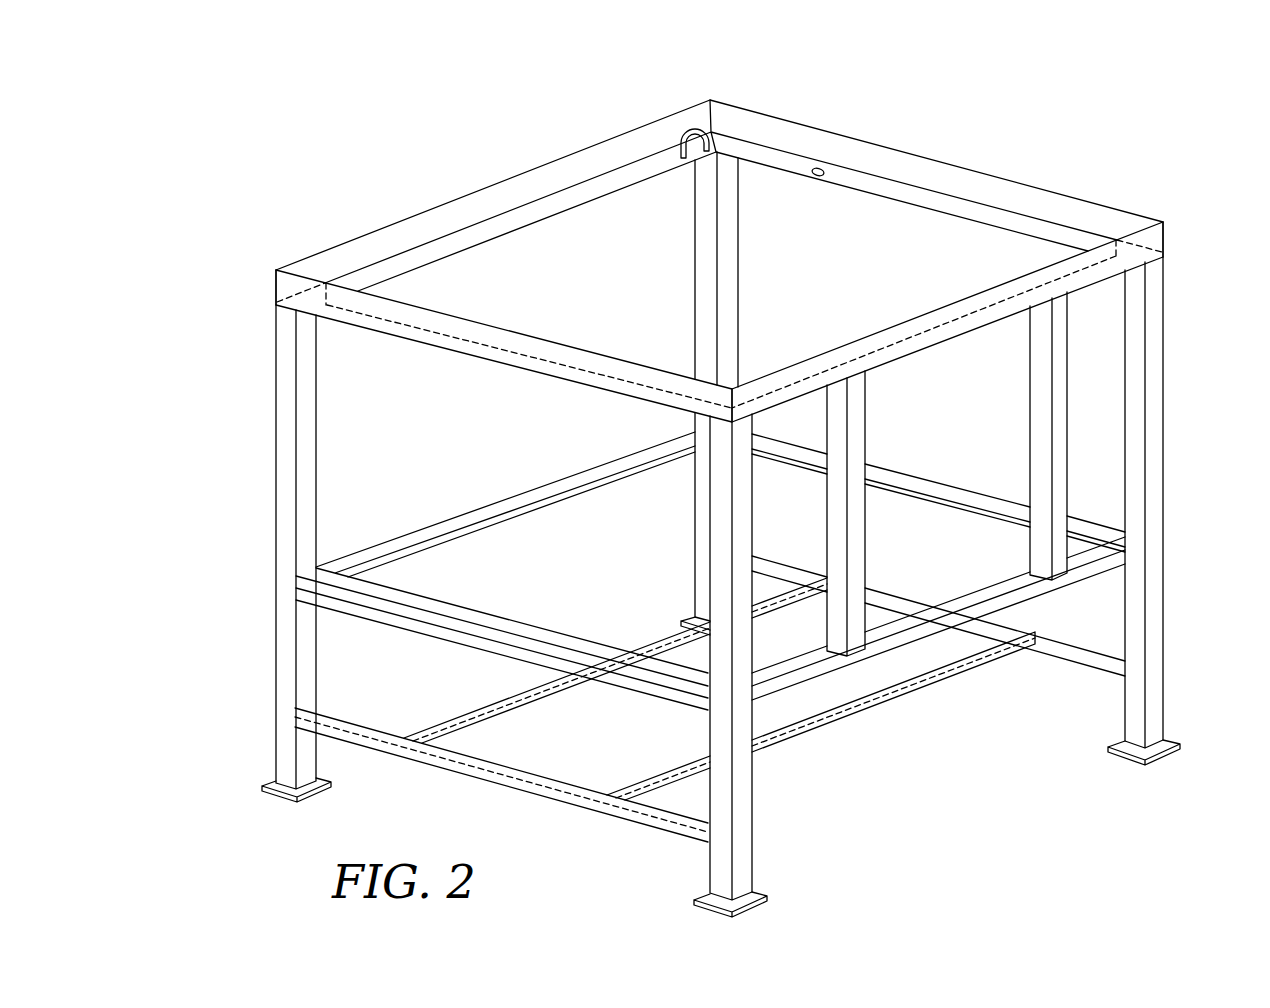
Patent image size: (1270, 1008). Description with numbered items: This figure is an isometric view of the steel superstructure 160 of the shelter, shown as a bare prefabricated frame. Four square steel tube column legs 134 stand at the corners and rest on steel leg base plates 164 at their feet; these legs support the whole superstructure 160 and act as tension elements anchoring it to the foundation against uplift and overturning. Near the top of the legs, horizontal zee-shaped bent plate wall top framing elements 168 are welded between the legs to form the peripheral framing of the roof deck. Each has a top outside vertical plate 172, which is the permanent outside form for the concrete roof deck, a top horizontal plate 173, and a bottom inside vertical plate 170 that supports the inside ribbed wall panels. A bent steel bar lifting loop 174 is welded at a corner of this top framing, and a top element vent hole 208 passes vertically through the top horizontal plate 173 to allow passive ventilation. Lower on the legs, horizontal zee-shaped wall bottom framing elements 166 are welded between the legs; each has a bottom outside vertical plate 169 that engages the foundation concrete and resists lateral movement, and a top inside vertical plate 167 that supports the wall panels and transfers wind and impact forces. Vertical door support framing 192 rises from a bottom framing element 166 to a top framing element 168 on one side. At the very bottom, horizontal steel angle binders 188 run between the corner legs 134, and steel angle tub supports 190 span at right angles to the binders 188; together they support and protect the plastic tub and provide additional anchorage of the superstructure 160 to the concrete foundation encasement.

The steel superstructure 160 is at (724, 478).
The steel tube column legs 134 is at (705, 298).
The steel leg base plates 164 is at (683, 618).
The wall bottom framing elements 166 is at (555, 480).
The top inside vertical plate 167 is at (447, 528).
The wall top framing elements 168 is at (947, 162).
The bottom outside vertical plate 169 is at (572, 500).
The bottom inside vertical plate 170 is at (603, 208).
The top outside vertical plate 172 is at (1012, 195).
The top horizontal plate 173 is at (712, 98).
The lifting loops 174 is at (683, 136).
The steel angle binders 188 is at (933, 600).
The steel angle tub supports 190 is at (498, 703).
The door support framing 192 is at (862, 416).
The top element vent holes 208 is at (822, 170).